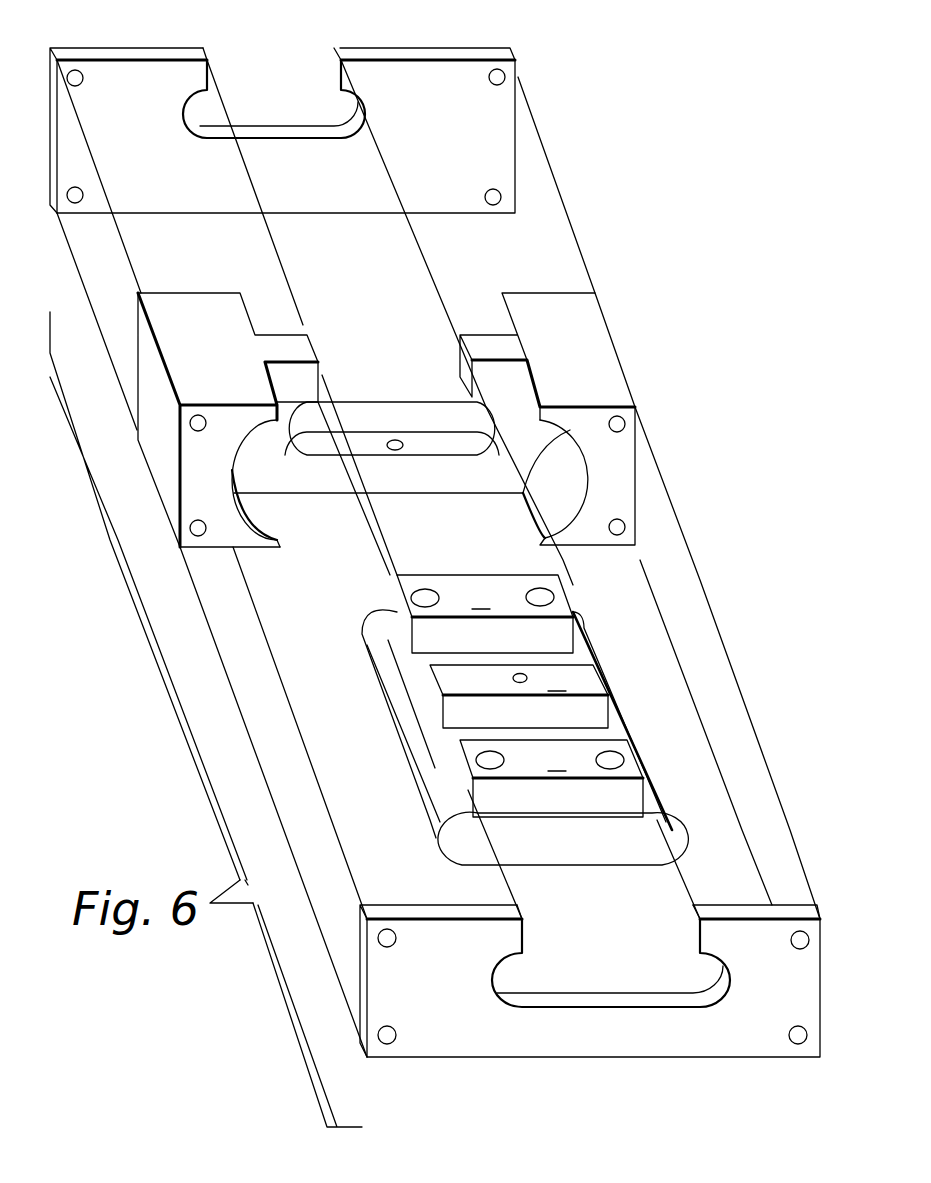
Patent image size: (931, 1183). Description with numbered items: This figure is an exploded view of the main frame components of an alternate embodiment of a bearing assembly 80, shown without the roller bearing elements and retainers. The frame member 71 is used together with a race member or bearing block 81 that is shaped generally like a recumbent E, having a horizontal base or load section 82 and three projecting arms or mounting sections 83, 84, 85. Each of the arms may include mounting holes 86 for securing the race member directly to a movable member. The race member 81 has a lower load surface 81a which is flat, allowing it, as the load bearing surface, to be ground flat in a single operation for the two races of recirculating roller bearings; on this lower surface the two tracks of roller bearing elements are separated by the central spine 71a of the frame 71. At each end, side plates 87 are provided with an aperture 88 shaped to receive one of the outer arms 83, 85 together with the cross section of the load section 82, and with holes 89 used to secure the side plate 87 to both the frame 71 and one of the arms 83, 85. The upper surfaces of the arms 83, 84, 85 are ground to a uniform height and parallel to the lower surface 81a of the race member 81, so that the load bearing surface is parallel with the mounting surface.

The frame member 71 is at (413, 423).
The central spine 71a is at (433, 447).
The bearing assembly 80 is at (610, 1060).
The race member 81 is at (581, 763).
The load surface 81a is at (552, 864).
The load section 82 is at (425, 768).
The mounting section 83 is at (567, 595).
The mounting section 84 is at (598, 678).
The mounting section 85 is at (632, 755).
The mounting holes 86 is at (420, 600).
The side plate 87 is at (435, 528).
The aperture 88 is at (283, 77).
The holes 89 is at (82, 191).